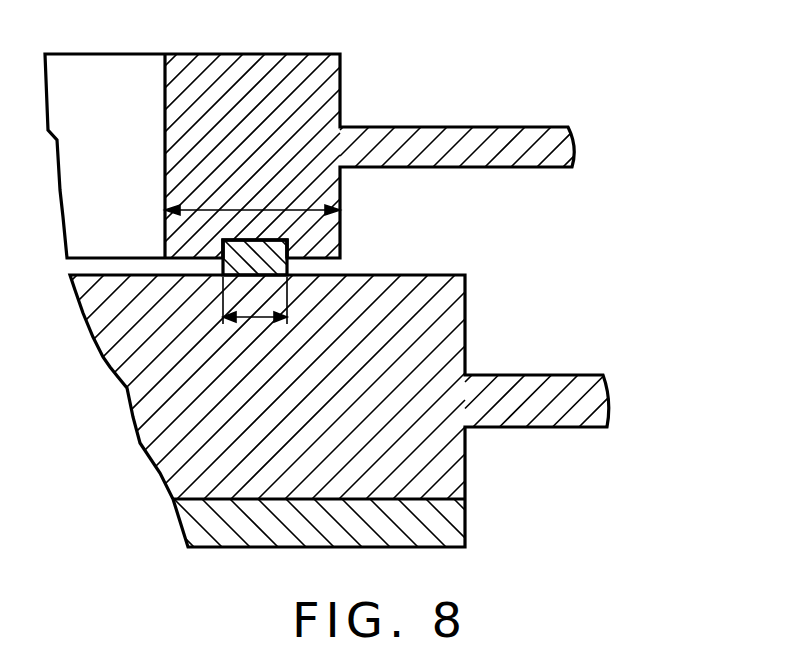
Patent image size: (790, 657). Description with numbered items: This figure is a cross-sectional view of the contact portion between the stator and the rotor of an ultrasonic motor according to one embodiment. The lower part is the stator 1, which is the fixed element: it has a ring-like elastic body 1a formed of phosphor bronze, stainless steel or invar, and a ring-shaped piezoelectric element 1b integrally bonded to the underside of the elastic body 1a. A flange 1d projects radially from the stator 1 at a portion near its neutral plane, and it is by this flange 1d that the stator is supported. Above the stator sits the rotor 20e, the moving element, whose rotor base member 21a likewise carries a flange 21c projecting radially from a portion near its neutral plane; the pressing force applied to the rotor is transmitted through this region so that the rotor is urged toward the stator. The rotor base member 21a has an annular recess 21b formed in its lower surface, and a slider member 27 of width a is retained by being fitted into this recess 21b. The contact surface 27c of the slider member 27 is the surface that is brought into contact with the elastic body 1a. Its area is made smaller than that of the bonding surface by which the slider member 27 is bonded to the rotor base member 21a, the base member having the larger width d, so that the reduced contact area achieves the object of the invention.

The rotor 20e is at (673, 22).
The rotor base member 21a is at (320, 89).
The flange 21c is at (519, 135).
The annular recess 21b is at (238, 240).
The slider member 27 is at (288, 247).
The contact surface 27c is at (289, 279).
The stator 1 is at (688, 292).
The elastic body 1a is at (437, 320).
The flange 1d is at (568, 388).
The piezoelectric element 1b is at (447, 522).